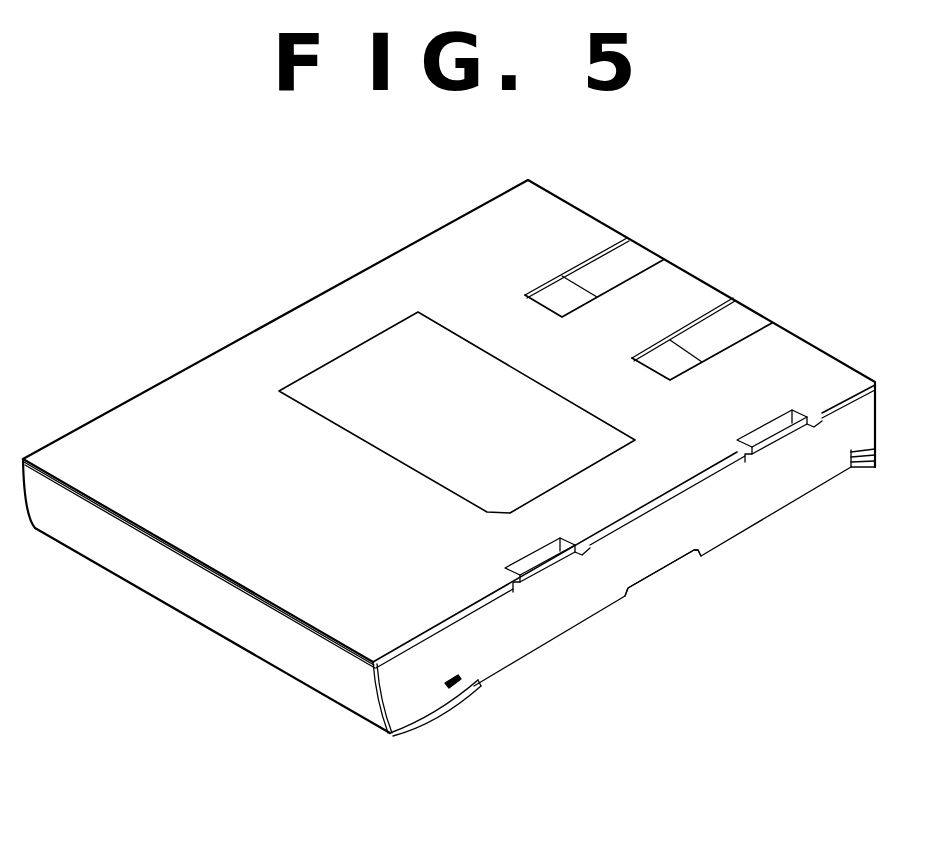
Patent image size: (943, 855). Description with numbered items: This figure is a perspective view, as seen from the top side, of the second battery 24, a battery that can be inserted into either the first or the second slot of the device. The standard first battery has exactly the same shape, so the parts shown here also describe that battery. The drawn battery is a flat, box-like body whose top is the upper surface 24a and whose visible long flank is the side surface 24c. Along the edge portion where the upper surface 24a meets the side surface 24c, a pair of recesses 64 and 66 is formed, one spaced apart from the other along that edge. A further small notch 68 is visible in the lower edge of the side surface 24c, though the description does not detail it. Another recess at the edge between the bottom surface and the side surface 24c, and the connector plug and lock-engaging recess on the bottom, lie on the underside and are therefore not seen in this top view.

The second battery 24 is at (357, 266).
The upper surface 24a is at (203, 383).
The side surface 24c is at (547, 623).
The recess 64 is at (522, 563).
The recess 66 is at (767, 428).
The notch 68 is at (658, 568).